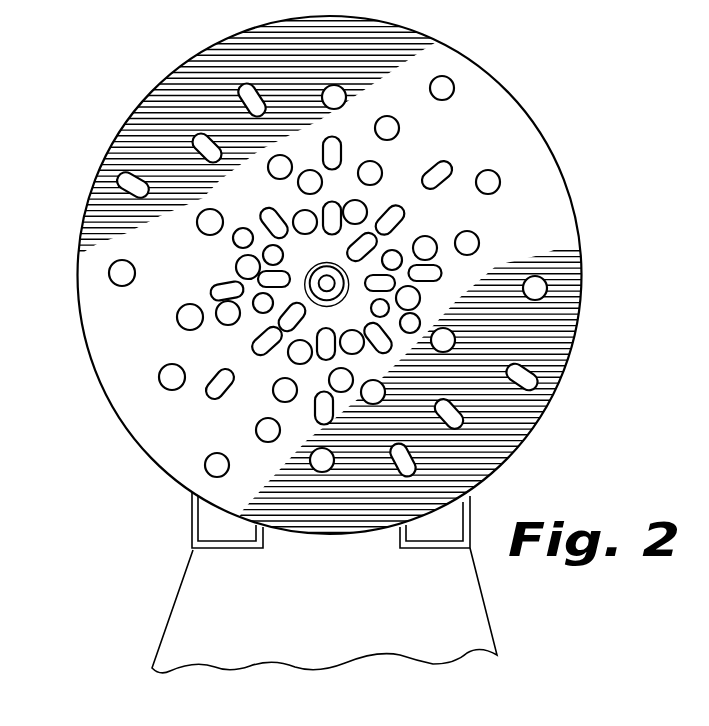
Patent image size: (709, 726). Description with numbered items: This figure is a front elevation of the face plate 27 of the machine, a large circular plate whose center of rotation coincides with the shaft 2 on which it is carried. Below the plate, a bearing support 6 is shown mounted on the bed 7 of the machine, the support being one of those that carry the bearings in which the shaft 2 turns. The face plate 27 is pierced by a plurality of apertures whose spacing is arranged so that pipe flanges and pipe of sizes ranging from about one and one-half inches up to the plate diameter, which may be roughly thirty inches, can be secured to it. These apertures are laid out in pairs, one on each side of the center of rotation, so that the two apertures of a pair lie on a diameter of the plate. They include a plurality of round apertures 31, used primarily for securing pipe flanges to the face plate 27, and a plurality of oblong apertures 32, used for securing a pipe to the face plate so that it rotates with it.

The shaft 2 is at (326, 276).
The bearing support 6 is at (190, 515).
The bed 7 is at (348, 611).
The face plate 27 is at (481, 139).
The round apertures 31 is at (430, 87).
The oblong apertures 32 is at (434, 171).